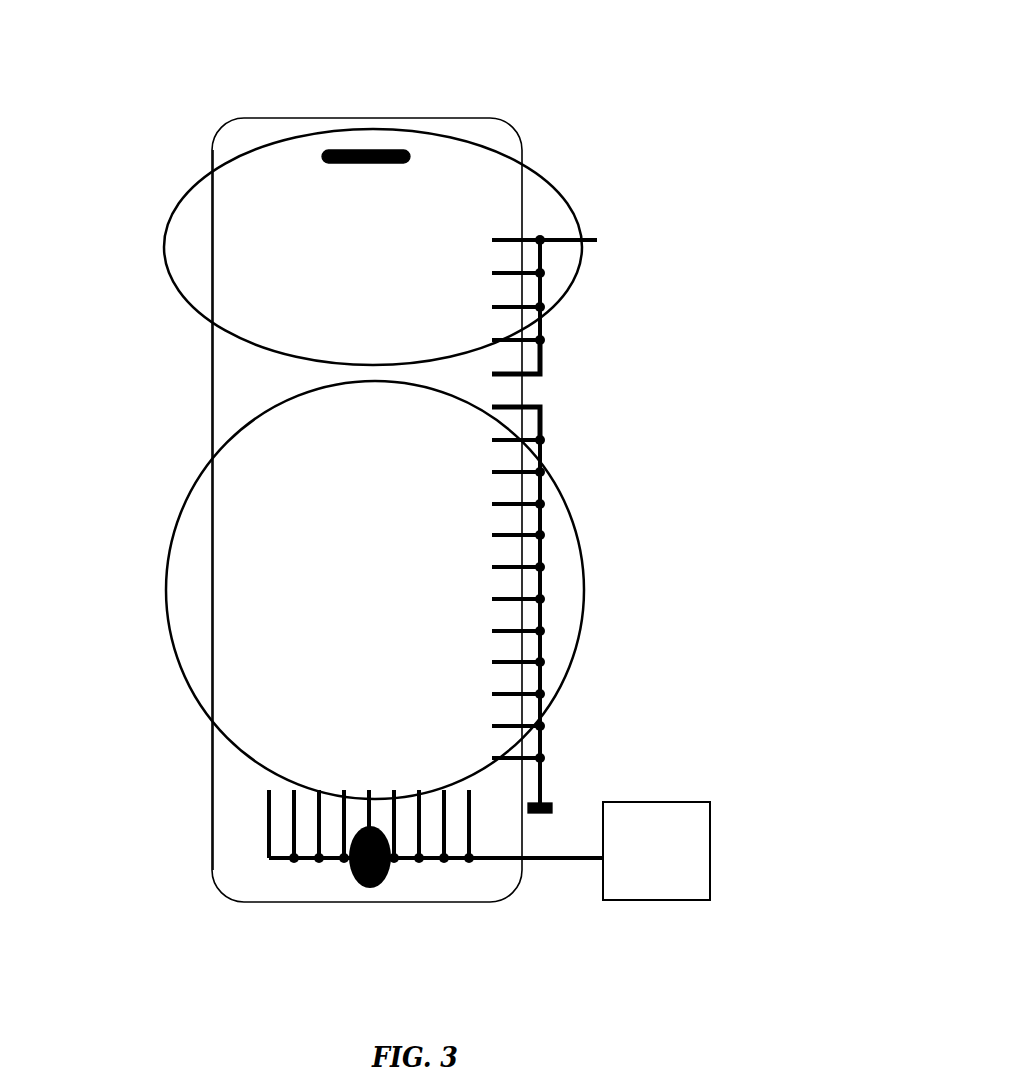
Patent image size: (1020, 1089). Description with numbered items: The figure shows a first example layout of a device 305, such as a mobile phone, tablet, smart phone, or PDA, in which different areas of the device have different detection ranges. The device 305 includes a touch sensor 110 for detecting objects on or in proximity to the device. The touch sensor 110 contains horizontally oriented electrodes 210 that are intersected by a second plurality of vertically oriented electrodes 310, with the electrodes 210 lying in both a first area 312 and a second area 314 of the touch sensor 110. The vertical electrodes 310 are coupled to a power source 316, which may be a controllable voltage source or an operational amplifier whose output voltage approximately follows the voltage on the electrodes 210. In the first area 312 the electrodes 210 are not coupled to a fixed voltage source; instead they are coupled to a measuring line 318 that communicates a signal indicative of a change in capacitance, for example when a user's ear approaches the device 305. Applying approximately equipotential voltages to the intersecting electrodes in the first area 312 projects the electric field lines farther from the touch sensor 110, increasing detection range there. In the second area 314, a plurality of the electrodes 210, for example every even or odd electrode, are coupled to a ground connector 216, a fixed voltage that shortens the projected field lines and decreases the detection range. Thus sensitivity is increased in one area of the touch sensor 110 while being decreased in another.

The device 305 is at (258, 114).
The touch sensor 110 is at (231, 360).
The electrodes 210 is at (491, 230).
The measuring line 318 is at (596, 231).
The ground connector 216 is at (550, 796).
The second plurality of electrodes 310 is at (262, 780).
The power source 316 is at (681, 796).
The first area 312 is at (186, 178).
The second area 314 is at (200, 488).